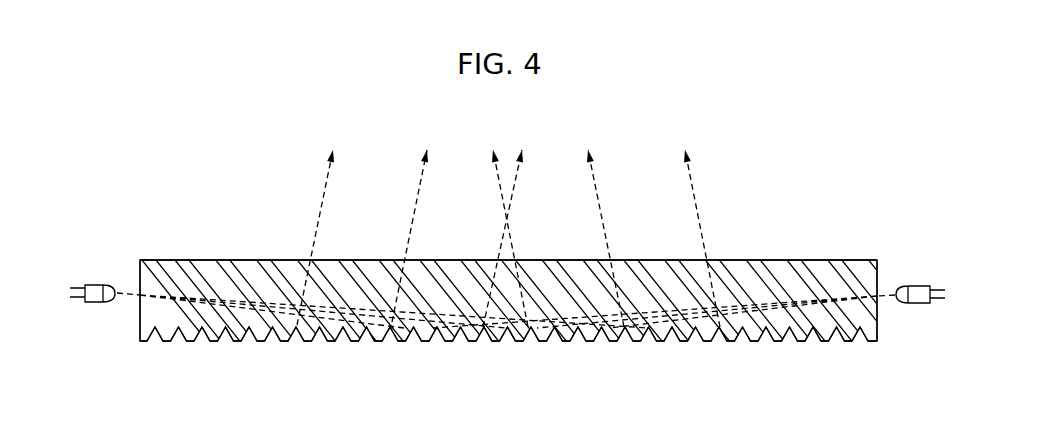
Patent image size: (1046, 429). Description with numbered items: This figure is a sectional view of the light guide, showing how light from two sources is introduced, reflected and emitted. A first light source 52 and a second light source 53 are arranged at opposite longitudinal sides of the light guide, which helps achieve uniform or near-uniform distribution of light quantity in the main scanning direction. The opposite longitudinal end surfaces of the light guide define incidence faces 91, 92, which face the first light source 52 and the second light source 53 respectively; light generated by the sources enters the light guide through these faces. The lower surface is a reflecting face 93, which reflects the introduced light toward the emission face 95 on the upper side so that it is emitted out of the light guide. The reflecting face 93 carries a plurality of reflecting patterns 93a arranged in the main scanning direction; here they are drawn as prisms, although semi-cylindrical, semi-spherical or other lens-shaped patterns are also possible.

The first light source 52 is at (98, 303).
The second light source 53 is at (925, 304).
The incidence face 91 is at (140, 316).
The incidence face 92 is at (879, 318).
The reflecting face 93 is at (594, 318).
The reflecting patterns 93a is at (401, 343).
The emission face 95 is at (798, 258).